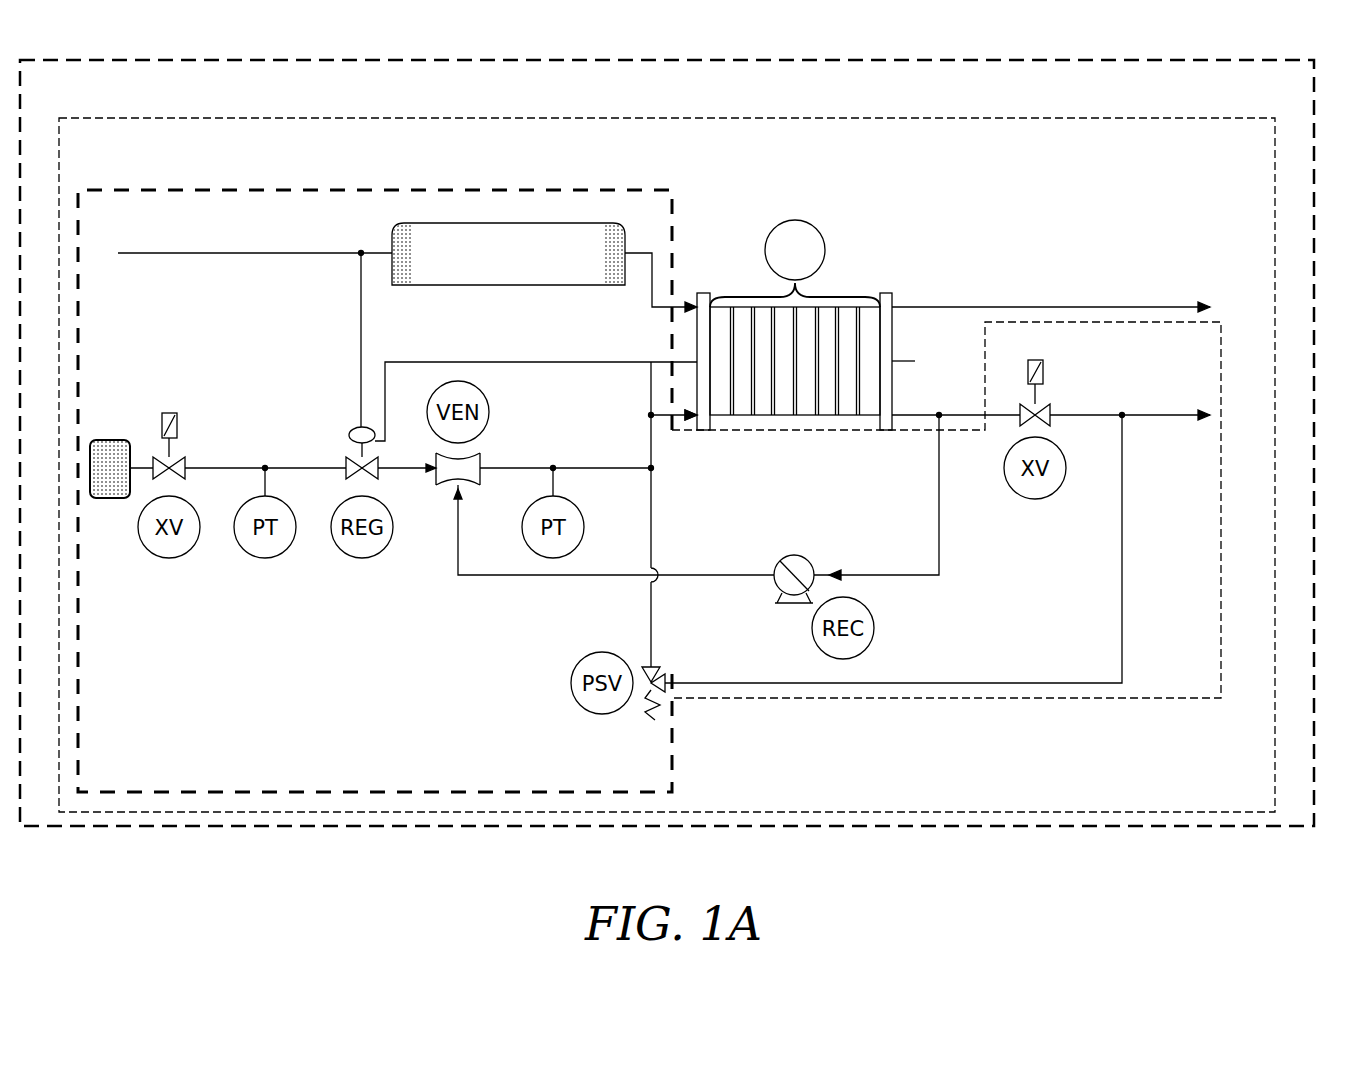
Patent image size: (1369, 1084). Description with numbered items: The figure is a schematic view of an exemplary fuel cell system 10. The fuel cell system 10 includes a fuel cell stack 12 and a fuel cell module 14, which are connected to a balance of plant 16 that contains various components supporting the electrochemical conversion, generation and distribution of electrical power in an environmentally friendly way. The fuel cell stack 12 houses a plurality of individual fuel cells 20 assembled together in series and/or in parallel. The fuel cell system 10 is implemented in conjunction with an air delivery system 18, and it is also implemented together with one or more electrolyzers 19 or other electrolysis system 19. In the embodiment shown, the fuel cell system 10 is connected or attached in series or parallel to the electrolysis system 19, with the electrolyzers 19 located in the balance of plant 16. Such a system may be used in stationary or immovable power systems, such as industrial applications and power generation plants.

The fuel cell system 10 is at (1338, 162).
The fuel cell stack 12 is at (795, 216).
The fuel cell module 14 is at (708, 283).
The balance of plant 16 is at (416, 190).
The air delivery system 18 is at (513, 291).
The electrolyzer 19 is at (112, 437).
The fuel cells 20 is at (871, 302).